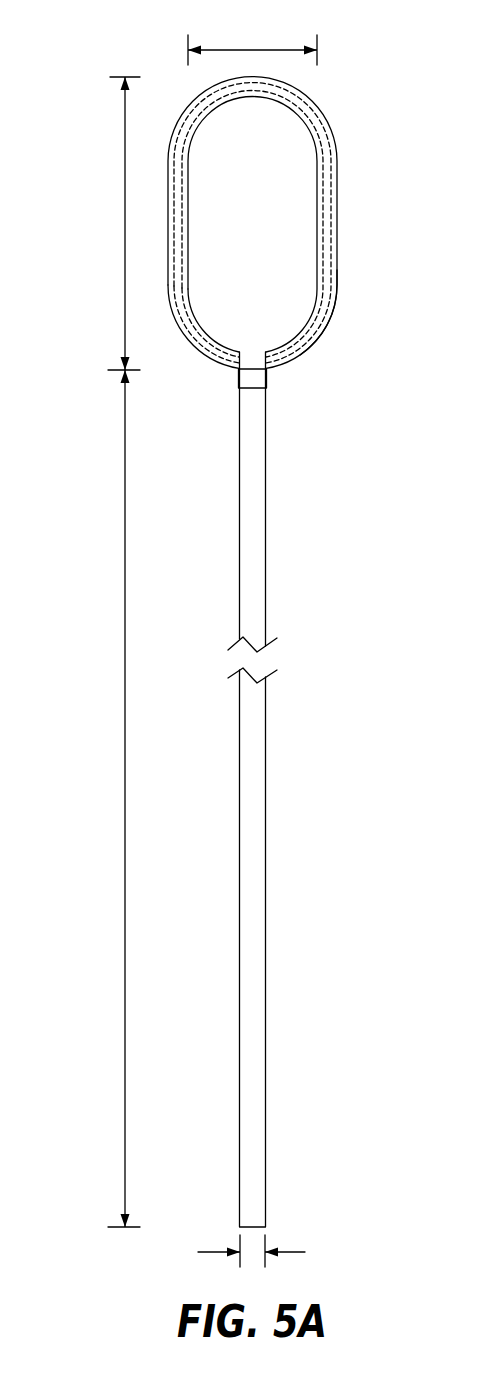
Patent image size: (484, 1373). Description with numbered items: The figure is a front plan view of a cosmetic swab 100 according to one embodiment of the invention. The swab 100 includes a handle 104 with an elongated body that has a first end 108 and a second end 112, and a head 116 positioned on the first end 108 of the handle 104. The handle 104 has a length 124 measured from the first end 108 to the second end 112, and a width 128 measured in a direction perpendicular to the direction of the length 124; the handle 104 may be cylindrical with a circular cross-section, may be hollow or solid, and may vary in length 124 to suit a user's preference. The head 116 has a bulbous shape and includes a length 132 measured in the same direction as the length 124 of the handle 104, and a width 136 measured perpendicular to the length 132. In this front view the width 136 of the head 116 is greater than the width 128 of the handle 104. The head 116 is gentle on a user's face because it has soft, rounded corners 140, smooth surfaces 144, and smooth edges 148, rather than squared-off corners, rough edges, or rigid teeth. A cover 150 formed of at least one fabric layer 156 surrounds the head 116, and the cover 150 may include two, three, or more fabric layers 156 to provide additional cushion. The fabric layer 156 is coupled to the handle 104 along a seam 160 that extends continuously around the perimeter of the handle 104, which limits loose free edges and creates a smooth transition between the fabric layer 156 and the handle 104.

The cosmetic swab 100 is at (235, 618).
The handle 104 is at (253, 789).
The first end 108 is at (289, 266).
The second end 112 is at (225, 1205).
The head 116 is at (300, 242).
The length 124 is at (125, 798).
The width 128 is at (287, 1248).
The length 132 is at (125, 223).
The width 136 is at (257, 48).
The rounded corners 140 is at (308, 100).
The smooth surfaces 144 is at (272, 216).
The edges 148 is at (322, 322).
The cover 150 is at (338, 168).
The fabric layer 156 is at (290, 348).
The seam 160 is at (256, 380).